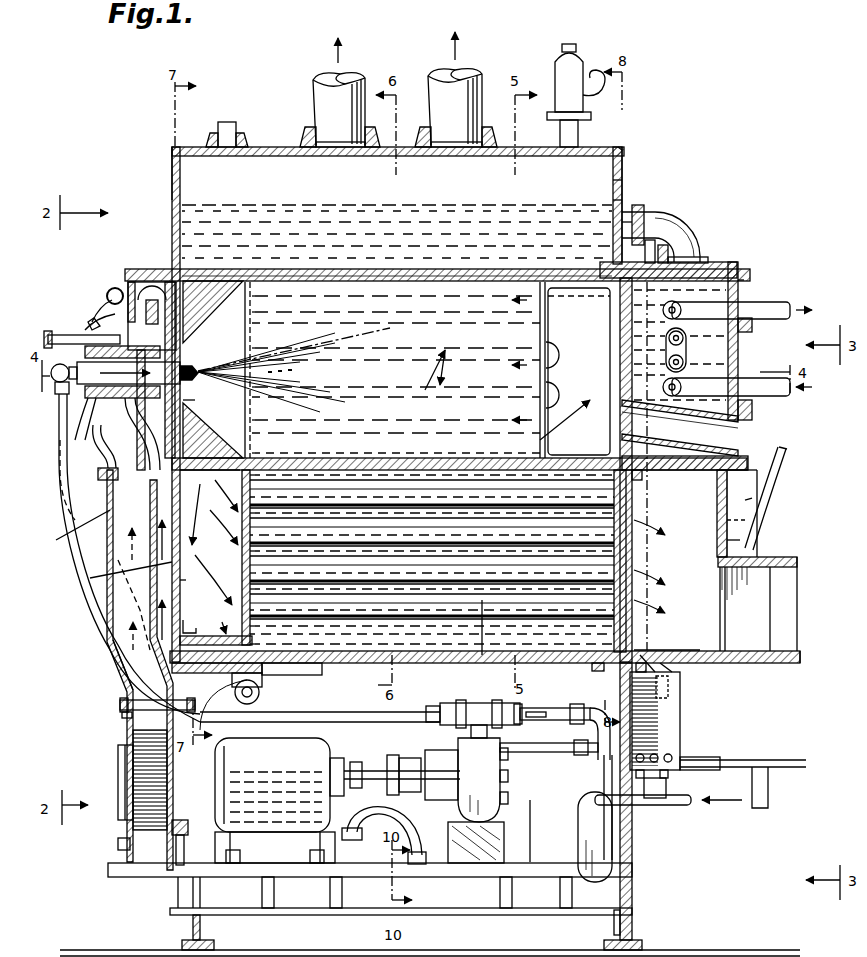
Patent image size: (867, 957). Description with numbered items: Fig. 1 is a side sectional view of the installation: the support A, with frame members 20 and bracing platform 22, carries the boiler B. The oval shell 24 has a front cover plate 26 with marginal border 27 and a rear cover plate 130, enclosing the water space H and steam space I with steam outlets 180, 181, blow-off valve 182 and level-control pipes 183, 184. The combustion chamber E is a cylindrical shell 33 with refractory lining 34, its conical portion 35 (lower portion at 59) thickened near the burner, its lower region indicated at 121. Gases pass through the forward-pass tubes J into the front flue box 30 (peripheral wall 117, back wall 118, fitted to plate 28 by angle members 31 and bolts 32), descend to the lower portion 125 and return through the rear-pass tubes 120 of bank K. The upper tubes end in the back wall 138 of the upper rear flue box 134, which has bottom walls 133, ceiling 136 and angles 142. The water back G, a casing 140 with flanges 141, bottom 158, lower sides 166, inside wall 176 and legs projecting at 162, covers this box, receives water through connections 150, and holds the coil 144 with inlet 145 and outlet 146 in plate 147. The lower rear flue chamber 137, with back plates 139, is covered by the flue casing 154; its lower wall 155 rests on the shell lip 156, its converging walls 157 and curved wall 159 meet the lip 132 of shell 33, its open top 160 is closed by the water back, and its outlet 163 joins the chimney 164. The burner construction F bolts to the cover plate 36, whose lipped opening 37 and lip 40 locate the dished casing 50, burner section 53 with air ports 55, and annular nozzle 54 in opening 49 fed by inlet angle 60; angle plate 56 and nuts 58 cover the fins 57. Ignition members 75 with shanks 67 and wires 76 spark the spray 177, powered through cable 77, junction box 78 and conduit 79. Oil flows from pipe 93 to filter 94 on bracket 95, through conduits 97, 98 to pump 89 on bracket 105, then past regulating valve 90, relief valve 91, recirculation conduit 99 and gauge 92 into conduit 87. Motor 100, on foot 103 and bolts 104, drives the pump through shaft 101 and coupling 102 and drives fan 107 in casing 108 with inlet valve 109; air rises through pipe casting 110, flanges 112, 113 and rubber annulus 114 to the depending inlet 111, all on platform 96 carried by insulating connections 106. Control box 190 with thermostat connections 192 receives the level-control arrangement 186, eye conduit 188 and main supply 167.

The tank shell 24 is at (262, 146).
The tank wall 26 is at (172, 170).
The tank right wall 130 is at (626, 156).
The upper compartment I is at (622, 146).
The side compartment H is at (624, 187).
The compartment B is at (624, 204).
The base plate 22 is at (298, 912).
The water body 136 is at (575, 265).
The separator plate 33 is at (365, 268).
The plate 117 is at (228, 265).
The vent cap 183 is at (228, 128).
The vent stack 180 is at (355, 76).
The vent stack 181 is at (472, 70).
The safety valve 182 is at (590, 60).
The spray chamber E is at (392, 370).
The baffle wedge 35 is at (270, 410).
The lower wedge 59 is at (213, 430).
The nozzle support 37 is at (186, 398).
The nozzle tip 76 is at (194, 364).
The spray 177 is at (333, 376).
The flow path J is at (424, 381).
The chamber floor 121 is at (284, 458).
The passage 57 is at (252, 300).
The partition 34 is at (480, 284).
The openings 134 is at (524, 428).
The collector chamber 138 is at (579, 371).
The chamber top 142 is at (579, 302).
The baffle 176 is at (618, 335).
The outlet 133 is at (575, 465).
The side tank 140 is at (724, 266).
The side compartment G is at (742, 280).
The elbow pipe 150 is at (672, 215).
The fitting 141 is at (670, 250).
The inlet pipe 146 is at (776, 304).
The outlet pipe 145 is at (780, 392).
The float 144 is at (686, 340).
The float valve 147 is at (686, 362).
The inclined duct 159 is at (680, 428).
The housing 154 is at (760, 490).
The hose 158 is at (782, 452).
The fitting 166 is at (755, 500).
The valve 162 is at (746, 522).
The wall 157 is at (708, 500).
The passage 160 is at (755, 592).
The plate 132 is at (644, 476).
The tube chamber K is at (341, 638).
The tubes 120 is at (416, 535).
The gauge 92 is at (479, 627).
The tube sheet 118 is at (290, 280).
The header chamber 28 is at (180, 540).
The opening 40 is at (182, 486).
The wall 32 is at (185, 581).
The drain 31 is at (186, 622).
The outlet 30 is at (225, 621).
The exit chamber 139 is at (650, 587).
The outlet duct 163 is at (700, 613).
The floor 137 is at (632, 630).
The nozzle housing 36 is at (150, 282).
The cap 58 is at (142, 296).
The packing 78 is at (130, 300).
The ring 50 is at (112, 288).
The arm 56 is at (94, 316).
The lever 53 is at (85, 326).
The nut 77 is at (86, 324).
The flange 75 is at (96, 346).
The bolt 67 is at (82, 340).
The ball joint 60 is at (58, 383).
The supply pipe 49 is at (59, 440).
The duct 54 is at (98, 400).
The duct 55 is at (126, 408).
The bracket 111 is at (110, 460).
The pipe F is at (100, 460).
The pipe 113 is at (73, 533).
The pipe 87 is at (160, 515).
The wire 125 is at (118, 573).
The air duct 110 is at (107, 612).
The duct bend 27 is at (130, 670).
The bracket 112 is at (120, 705).
The bolt 114 is at (122, 714).
The plate 109 is at (118, 760).
The fan 107 is at (150, 795).
The support 108 is at (118, 845).
The bolt 79 is at (178, 840).
The frame 106 is at (180, 900).
The support 20 is at (196, 674).
The pulley 184 is at (260, 693).
The motor 100 is at (279, 784).
The motor base 103 is at (286, 865).
The bolt 104 is at (232, 865).
The shaft 101 is at (374, 781).
The coupling 102 is at (394, 796).
The conduit 96 is at (350, 870).
The pump 89 is at (500, 765).
The pump pedestal 105 is at (476, 868).
The valve 90 is at (444, 725).
The pipe 98 is at (564, 708).
The fitting 91 is at (520, 722).
The pipe 99 is at (556, 746).
The bracket 97 is at (598, 762).
The tank 95 is at (576, 848).
The tank 94 is at (612, 855).
The pipe 93 is at (674, 806).
The control box 190 is at (682, 712).
The terminals 192 is at (648, 760).
The switch 156 is at (668, 688).
The bracket 155 is at (670, 672).
The bracket 188 is at (680, 672).
The plate 164 is at (800, 663).
The pipe 167 is at (796, 760).
The trap 186 is at (768, 806).
The frame A is at (636, 920).